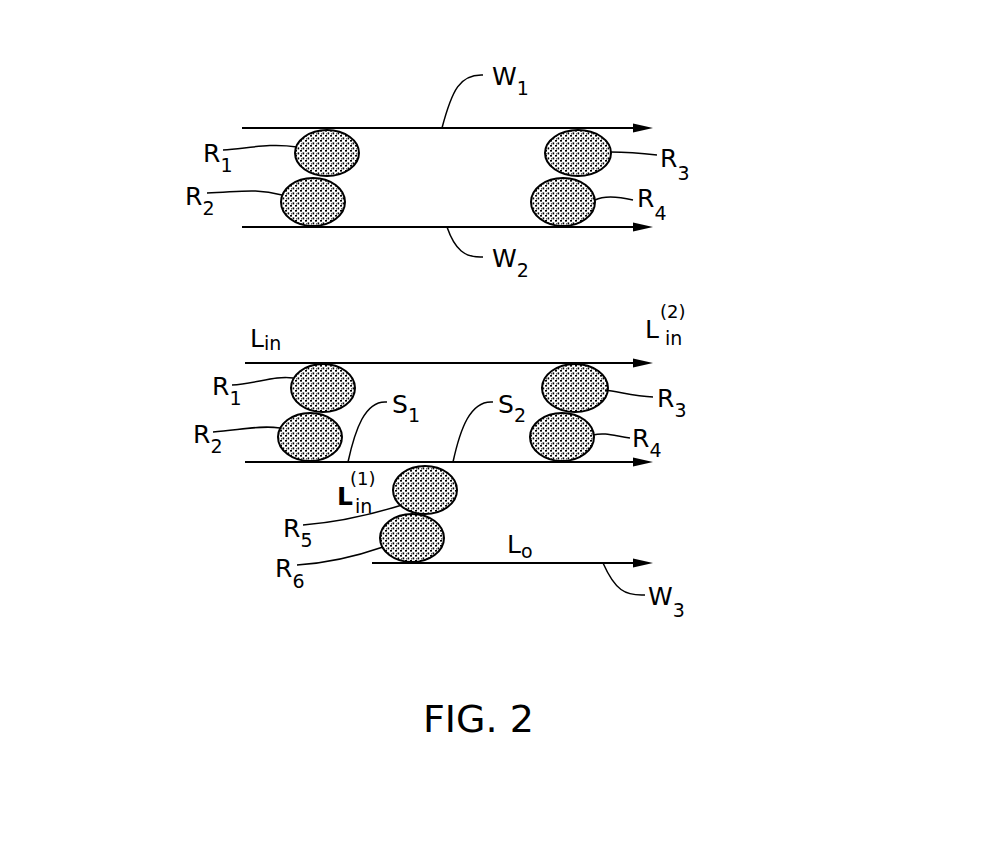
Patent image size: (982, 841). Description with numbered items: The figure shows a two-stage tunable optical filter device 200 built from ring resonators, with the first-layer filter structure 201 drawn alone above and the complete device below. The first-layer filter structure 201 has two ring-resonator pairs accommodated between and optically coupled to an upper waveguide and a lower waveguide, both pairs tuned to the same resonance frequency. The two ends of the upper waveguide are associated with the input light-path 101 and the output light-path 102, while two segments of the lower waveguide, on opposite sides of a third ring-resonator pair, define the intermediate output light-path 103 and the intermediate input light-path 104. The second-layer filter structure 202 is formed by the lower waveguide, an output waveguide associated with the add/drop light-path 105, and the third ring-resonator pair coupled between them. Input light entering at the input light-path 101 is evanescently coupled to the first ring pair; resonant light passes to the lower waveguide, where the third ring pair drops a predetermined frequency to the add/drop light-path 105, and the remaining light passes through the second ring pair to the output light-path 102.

The input light-path 101 is at (402, 238).
The output light-path 102 is at (675, 247).
The intermediate output light-path 103 is at (439, 326).
The intermediate input light-path 104 is at (567, 329).
The add/drop light-path 105 is at (512, 584).
The tunable filter device 200 is at (222, 330).
The first-layer filter structure 201 is at (580, 100).
The second-layer filter structure 202 is at (338, 583).